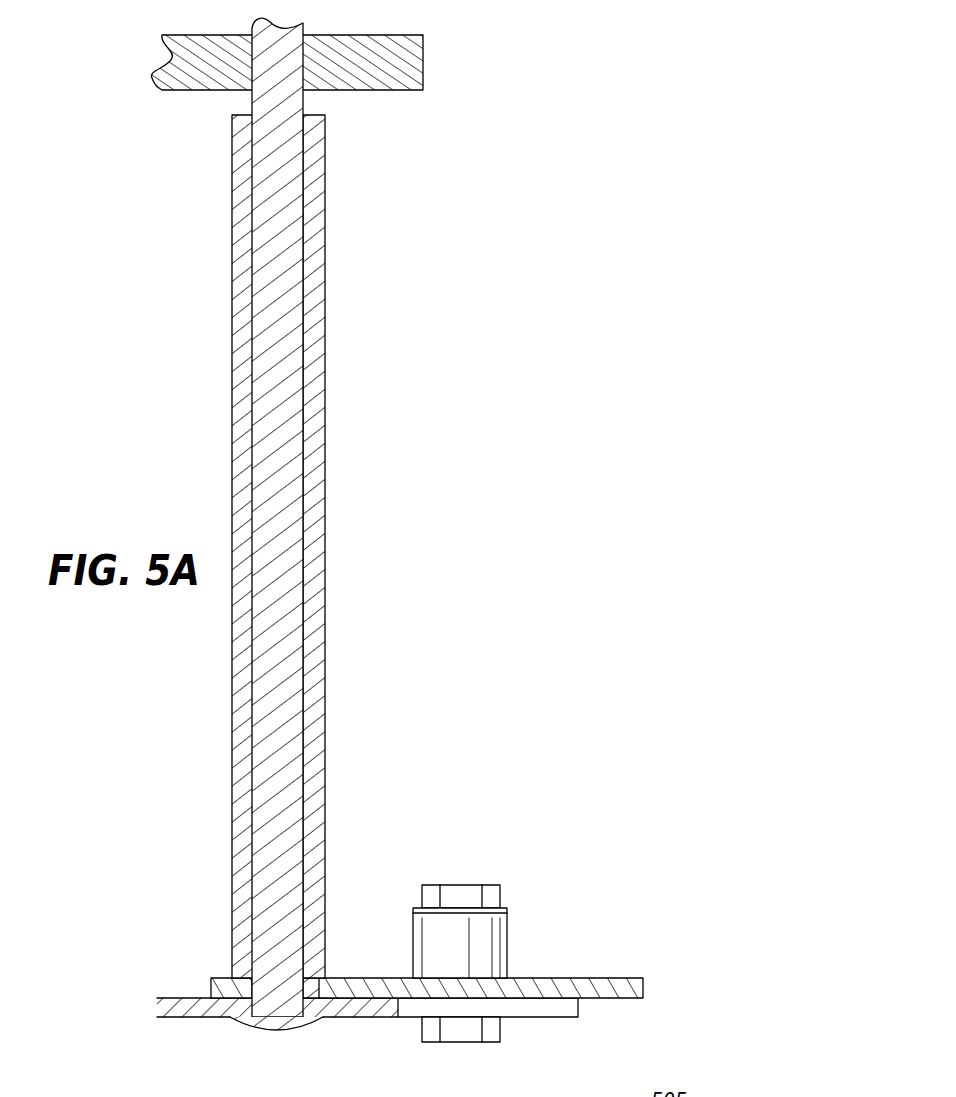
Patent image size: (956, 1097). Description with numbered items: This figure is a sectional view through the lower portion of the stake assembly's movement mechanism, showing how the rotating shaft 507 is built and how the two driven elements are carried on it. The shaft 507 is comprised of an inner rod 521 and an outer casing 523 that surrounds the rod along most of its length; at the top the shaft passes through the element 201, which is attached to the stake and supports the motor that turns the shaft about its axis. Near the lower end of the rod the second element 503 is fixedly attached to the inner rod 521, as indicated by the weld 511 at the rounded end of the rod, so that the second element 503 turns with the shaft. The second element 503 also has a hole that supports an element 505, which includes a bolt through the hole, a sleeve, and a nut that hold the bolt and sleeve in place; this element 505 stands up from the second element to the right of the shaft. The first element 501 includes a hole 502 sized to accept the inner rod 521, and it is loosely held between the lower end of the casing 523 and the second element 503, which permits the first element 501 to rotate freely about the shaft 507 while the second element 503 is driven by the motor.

The element 201 is at (343, 90).
The first element 501 is at (210, 988).
The hole 502 is at (312, 990).
The second element 503 is at (207, 1018).
The element 505 is at (484, 845).
The shaft 507 is at (312, 543).
The weld 511 is at (258, 1031).
The inner rod 521 is at (305, 328).
The outer casing 523 is at (325, 293).